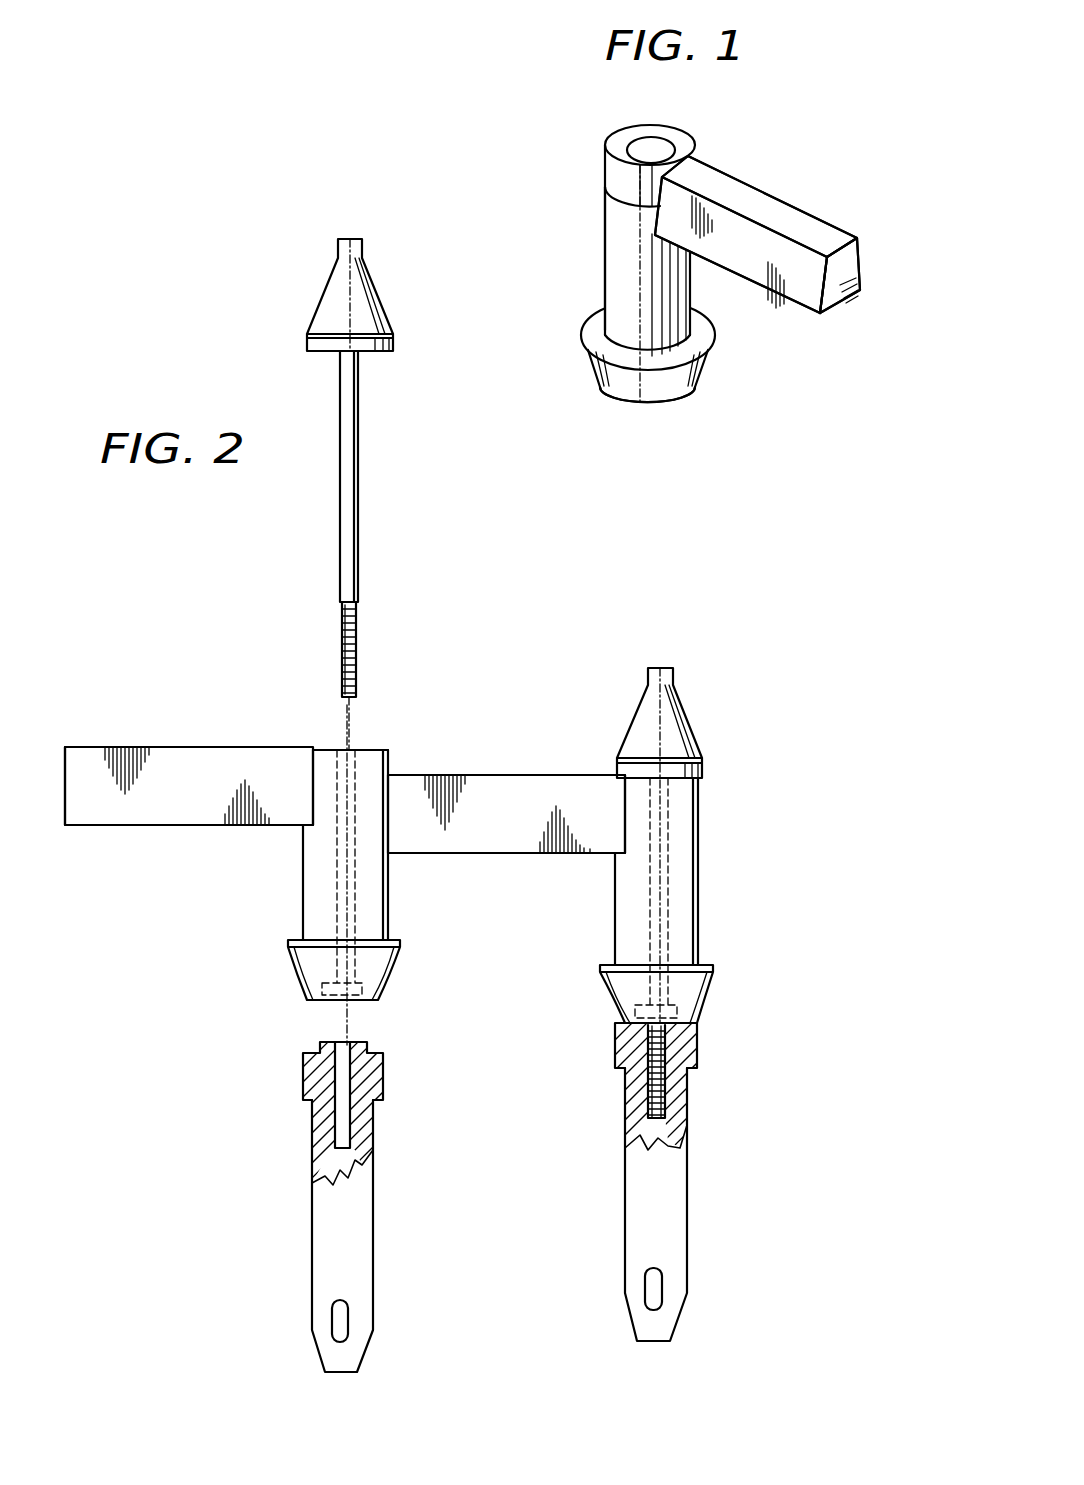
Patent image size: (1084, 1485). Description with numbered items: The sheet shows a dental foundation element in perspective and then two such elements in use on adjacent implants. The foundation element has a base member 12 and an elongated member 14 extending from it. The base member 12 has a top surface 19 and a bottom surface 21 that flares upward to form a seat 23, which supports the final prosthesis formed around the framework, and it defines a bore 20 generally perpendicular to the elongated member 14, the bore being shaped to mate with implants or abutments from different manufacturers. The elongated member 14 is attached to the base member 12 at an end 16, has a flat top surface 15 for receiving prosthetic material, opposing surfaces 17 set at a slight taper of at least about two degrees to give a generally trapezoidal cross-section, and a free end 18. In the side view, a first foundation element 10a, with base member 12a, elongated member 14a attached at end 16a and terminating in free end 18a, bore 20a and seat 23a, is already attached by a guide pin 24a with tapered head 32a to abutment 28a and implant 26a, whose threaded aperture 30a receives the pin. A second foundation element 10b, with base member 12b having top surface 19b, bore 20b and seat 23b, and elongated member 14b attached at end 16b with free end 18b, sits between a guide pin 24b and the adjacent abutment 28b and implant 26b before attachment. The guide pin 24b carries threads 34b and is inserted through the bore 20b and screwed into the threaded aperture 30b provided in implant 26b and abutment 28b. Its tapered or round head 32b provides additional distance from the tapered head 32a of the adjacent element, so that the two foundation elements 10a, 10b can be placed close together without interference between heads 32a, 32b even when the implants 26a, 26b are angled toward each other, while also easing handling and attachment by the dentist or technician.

In FIG. 2, the foundation element 10a is at (632, 869).
In FIG. 2, the foundation element 10b is at (246, 859).
In FIG. 1, the base member 12 is at (605, 233).
In FIG. 2, the base member 12a is at (618, 903).
In FIG. 2, the base member 12b is at (338, 864).
In FIG. 1, the elongated member 14 is at (770, 162).
In FIG. 2, the elongated member 14a is at (505, 845).
In FIG. 2, the elongated member 14b is at (123, 747).
In FIG. 1, the top surface 15 is at (815, 225).
In FIG. 1, the end 16 is at (624, 200).
In FIG. 2, the end 16a is at (627, 803).
In FIG. 2, the end 16b is at (313, 773).
In FIG. 1, the opposing surfaces 17 is at (870, 264).
In FIG. 1, the free end 18 is at (840, 300).
In FIG. 2, the free end 18a is at (378, 833).
In FIG. 2, the free end 18b is at (65, 797).
In FIG. 1, the top surface 19 is at (616, 147).
In FIG. 2, the top surface 19b is at (327, 747).
In FIG. 1, the bore 20 is at (654, 145).
In FIG. 2, the bore 20a is at (680, 800).
In FIG. 2, the bore 20b is at (357, 763).
In FIG. 1, the bottom surface 21 is at (645, 403).
In FIG. 1, the seat 23 is at (590, 320).
In FIG. 2, the seat 23a is at (700, 972).
In FIG. 2, the seat 23b is at (307, 940).
In FIG. 2, the guide pin 24a is at (713, 835).
In FIG. 2, the guide pin 24b is at (289, 494).
In FIG. 2, the implant 26a is at (677, 1193).
In FIG. 2, the implant 26b is at (360, 1205).
In FIG. 2, the abutment 28a is at (697, 1042).
In FIG. 2, the abutment 28b is at (385, 1073).
In FIG. 2, the threaded aperture 30a is at (653, 1088).
In FIG. 2, the threaded aperture 30b is at (340, 1108).
In FIG. 2, the tapered head 32a is at (692, 700).
In FIG. 2, the tapered head 32b is at (319, 294).
In FIG. 2, the threads 34b is at (342, 657).